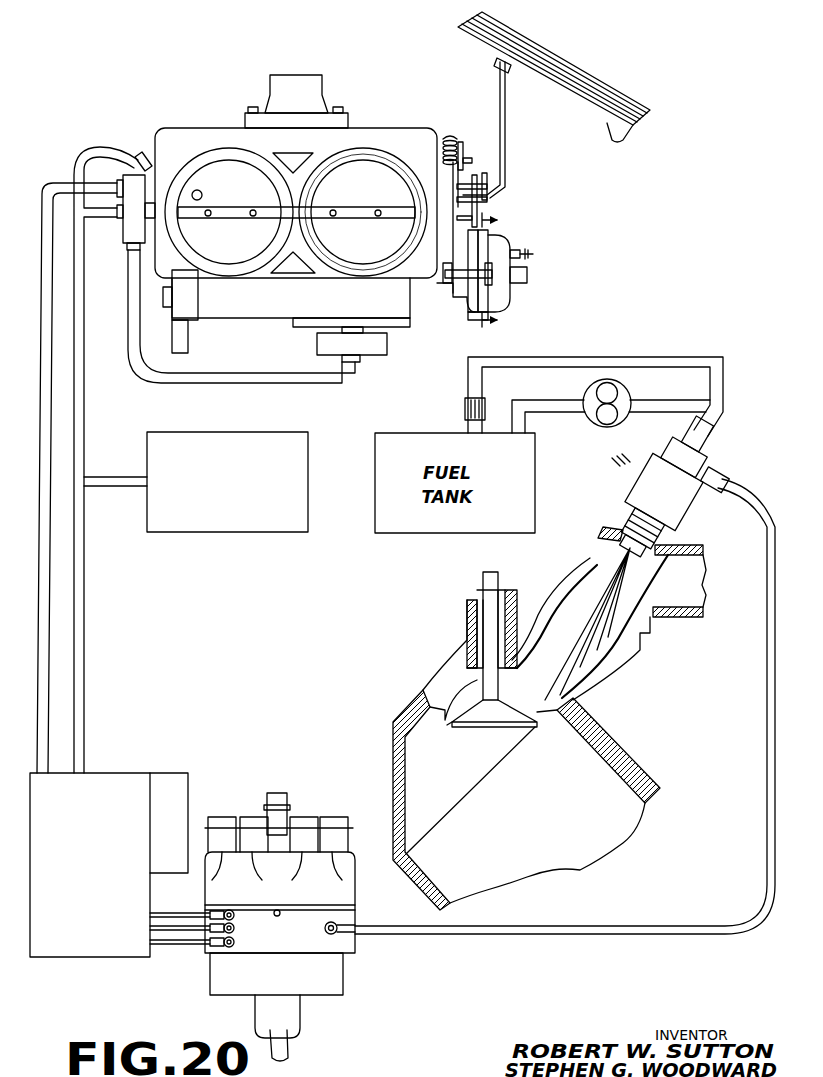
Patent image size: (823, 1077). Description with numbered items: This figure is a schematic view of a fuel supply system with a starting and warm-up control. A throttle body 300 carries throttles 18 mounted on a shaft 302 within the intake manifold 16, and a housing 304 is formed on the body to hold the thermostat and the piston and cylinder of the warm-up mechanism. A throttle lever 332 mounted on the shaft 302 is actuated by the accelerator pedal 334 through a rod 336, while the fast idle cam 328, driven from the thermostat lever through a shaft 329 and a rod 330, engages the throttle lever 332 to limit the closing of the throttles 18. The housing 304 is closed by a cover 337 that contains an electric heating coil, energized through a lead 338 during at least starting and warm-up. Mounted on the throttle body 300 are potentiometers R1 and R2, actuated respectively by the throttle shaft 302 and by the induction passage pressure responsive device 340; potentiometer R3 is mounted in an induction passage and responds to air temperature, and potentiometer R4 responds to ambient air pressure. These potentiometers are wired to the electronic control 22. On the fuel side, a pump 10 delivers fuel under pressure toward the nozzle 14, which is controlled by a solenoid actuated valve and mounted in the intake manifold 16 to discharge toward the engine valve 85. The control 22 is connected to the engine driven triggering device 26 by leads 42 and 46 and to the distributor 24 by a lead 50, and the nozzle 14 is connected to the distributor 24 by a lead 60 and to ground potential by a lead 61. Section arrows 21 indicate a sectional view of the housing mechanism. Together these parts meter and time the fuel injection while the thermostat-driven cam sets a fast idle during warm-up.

The throttle body 300 is at (382, 134).
The throttle valve 18 is at (347, 253).
The throttle shaft 302 is at (233, 213).
The potentiometer R4 is at (201, 191).
The induction passage pressure responsive device 340 is at (257, 307).
The potentiometer R1 is at (128, 225).
The potentiometer R2 is at (378, 352).
The potentiometer R3 is at (250, 520).
The accelerator pedal 334 is at (593, 78).
The rod 336 is at (506, 158).
The fast idle cam 328 is at (465, 148).
The throttle lever 332 is at (490, 200).
The rod 330 is at (472, 218).
The section arrows 21 is at (506, 274).
The cover 337 is at (510, 300).
The lead 338 is at (533, 253).
The shaft 329 is at (453, 278).
The housing 304 is at (482, 320).
The pump 10 is at (625, 394).
The nozzle 14 is at (680, 511).
The lead 61 is at (622, 452).
The intake manifold 16 is at (596, 567).
The intake valve 85 is at (480, 724).
The lead 60 is at (472, 934).
The electronic control 22 is at (133, 785).
The lead 50 is at (176, 915).
The lead 46 is at (193, 937).
The lead 42 is at (170, 945).
The triggering device 26 is at (337, 945).
The distributor 24 is at (290, 820).